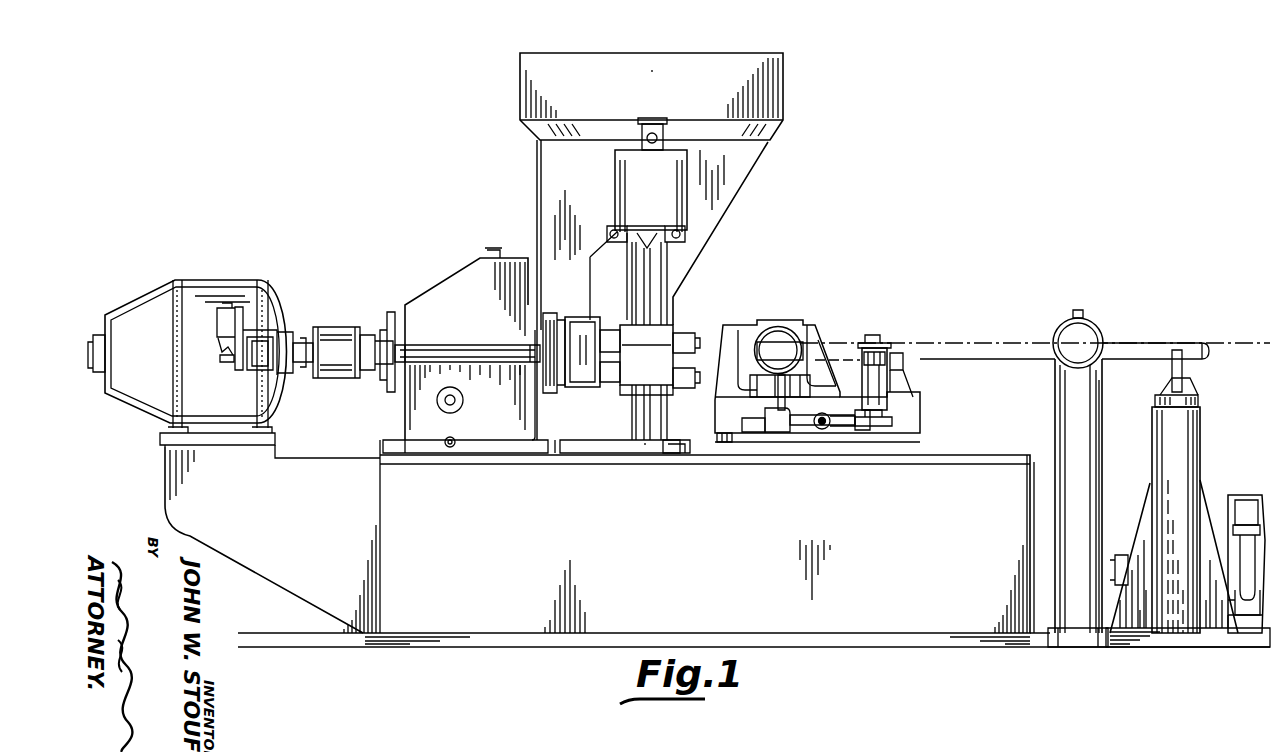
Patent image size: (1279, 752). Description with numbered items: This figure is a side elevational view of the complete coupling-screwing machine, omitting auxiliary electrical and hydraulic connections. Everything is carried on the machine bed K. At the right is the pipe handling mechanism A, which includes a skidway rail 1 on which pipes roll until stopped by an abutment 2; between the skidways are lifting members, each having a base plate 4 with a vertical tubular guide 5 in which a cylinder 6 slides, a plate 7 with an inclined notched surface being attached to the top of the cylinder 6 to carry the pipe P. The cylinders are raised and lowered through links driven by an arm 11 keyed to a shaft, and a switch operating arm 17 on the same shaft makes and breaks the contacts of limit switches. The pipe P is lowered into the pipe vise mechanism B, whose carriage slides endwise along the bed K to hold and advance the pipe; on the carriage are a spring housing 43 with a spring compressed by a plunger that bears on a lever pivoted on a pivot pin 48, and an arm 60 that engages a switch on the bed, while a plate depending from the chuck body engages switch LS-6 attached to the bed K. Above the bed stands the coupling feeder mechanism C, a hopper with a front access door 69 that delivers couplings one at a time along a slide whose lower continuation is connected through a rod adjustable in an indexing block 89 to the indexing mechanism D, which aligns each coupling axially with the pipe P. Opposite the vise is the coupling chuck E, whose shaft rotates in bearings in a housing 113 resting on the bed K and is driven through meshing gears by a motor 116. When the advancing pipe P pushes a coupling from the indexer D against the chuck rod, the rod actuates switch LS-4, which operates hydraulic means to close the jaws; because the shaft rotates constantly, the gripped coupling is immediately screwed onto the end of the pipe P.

The motor 116 is at (212, 298).
The switch LS-4 is at (217, 326).
The housing 113 is at (467, 350).
The coupling feeder mechanism C is at (651, 246).
The front access door 69 is at (651, 196).
The indexing block 89 is at (636, 405).
The coupling chuck E is at (580, 338).
The indexing mechanism D is at (668, 334).
The pipe vise mechanism B is at (815, 336).
The base plate 4 is at (903, 365).
The spring housing 43 is at (880, 389).
The pivot pin 48 is at (822, 424).
The arm 60 is at (725, 442).
The switch LS-6 is at (740, 424).
The vertical tubular guide 5 is at (676, 452).
The pipe P is at (983, 343).
The abutment 2 is at (1085, 312).
The rail 1 is at (1072, 383).
The plate 7 is at (1182, 371).
The cylinder 6 is at (1198, 404).
The pipe handling mechanism A is at (1168, 421).
The switch operating arm 17 is at (1248, 525).
The arm 11 is at (652, 70).
The bed K is at (717, 543).